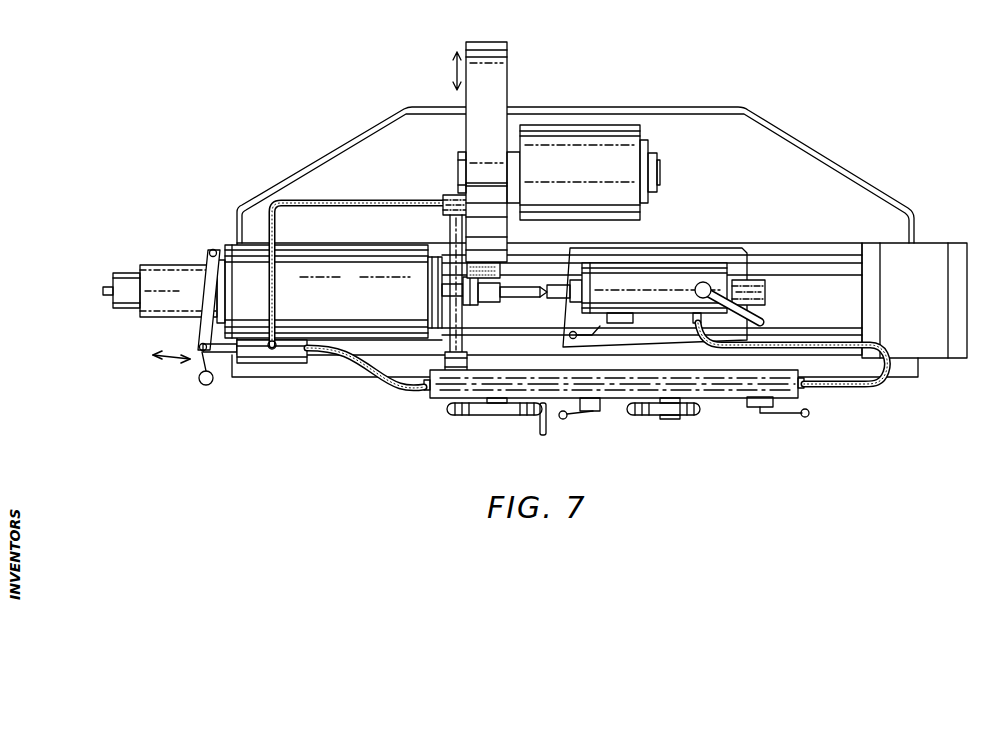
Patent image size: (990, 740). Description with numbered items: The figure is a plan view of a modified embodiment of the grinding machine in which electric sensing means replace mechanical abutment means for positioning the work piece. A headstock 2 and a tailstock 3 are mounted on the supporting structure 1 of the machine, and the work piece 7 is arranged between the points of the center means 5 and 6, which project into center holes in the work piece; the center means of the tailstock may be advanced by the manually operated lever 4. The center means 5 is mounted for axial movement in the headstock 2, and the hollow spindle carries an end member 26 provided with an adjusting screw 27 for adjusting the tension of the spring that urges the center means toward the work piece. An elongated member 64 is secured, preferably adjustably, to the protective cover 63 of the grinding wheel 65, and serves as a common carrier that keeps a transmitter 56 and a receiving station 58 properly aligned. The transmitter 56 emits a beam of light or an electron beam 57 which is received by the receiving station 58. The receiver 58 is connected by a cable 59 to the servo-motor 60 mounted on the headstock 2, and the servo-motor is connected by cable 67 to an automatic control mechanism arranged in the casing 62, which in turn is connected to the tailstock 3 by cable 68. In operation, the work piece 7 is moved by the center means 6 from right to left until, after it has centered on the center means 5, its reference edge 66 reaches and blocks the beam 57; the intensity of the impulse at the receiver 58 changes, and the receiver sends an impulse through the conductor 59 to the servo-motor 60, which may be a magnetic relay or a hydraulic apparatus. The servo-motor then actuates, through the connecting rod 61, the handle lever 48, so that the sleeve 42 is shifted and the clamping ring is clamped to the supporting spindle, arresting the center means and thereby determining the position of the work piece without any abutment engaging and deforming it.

The supporting structure 1 is at (936, 356).
The headstock 2 is at (345, 262).
The tailstock 3 is at (664, 268).
The manually operated lever 4 is at (766, 320).
The center means 5 is at (445, 289).
The center means 6 is at (560, 303).
The work piece 7 is at (537, 300).
The end member 26 is at (122, 308).
The adjusting screw 27 is at (102, 292).
The sleeve 42 is at (175, 266).
The operating lever 48 is at (199, 382).
The transmitter 56 is at (466, 360).
The beam 57 is at (449, 228).
The receiving station 58 is at (452, 195).
The cable 59 is at (372, 203).
The servo-motor 60 is at (291, 370).
The connecting rod 61 is at (223, 370).
The casing 62 is at (733, 398).
The protective cover 63 is at (498, 86).
The elongated member 64 is at (468, 240).
The grinding wheel 65 is at (497, 272).
The reference edge 66 is at (466, 304).
The cable 67 is at (388, 385).
The cable 68 is at (855, 389).